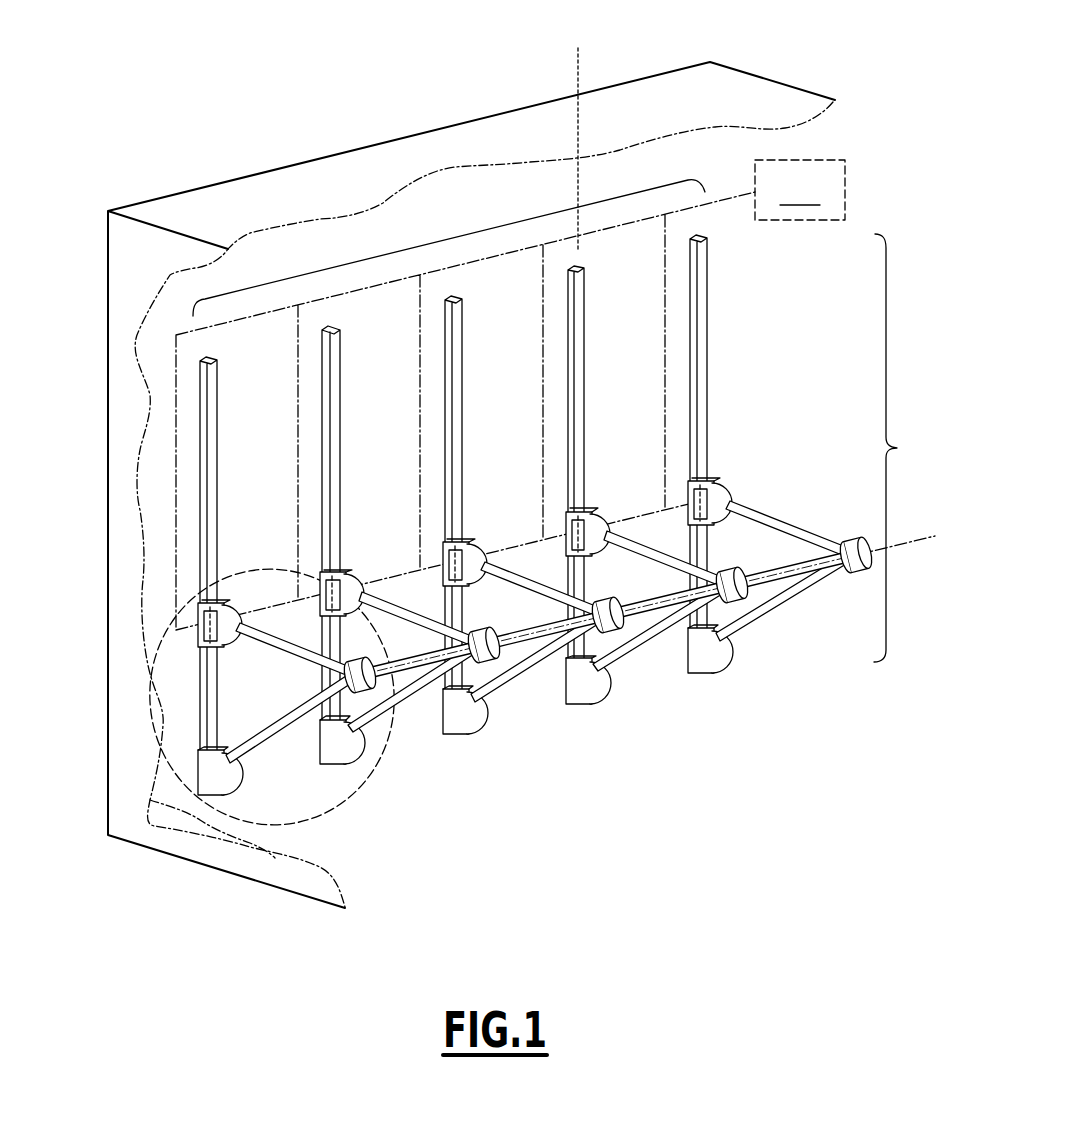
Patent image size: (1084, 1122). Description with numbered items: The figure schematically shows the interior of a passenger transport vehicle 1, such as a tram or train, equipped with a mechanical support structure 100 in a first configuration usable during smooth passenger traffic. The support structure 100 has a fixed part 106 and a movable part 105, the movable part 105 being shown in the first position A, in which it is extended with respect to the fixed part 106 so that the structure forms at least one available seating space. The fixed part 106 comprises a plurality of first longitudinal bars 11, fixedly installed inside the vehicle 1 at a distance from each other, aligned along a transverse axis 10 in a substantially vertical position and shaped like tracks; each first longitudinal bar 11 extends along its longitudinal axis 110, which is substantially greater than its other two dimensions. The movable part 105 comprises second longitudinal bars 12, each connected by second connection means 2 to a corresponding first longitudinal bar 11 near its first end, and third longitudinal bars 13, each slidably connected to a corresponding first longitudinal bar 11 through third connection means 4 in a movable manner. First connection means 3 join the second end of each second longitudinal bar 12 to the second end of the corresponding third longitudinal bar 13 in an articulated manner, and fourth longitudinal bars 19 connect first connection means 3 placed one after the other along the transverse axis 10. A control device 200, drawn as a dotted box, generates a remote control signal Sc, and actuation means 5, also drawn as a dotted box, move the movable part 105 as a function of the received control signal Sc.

The passenger transport vehicle 1 is at (298, 192).
The second connection means 2 is at (207, 770).
The first connection means 3 is at (374, 690).
The third connection means 4 is at (241, 612).
The actuation means 5 is at (200, 640).
The transverse axis 10 is at (928, 548).
The first longitudinal bar 11 is at (322, 476).
The second longitudinal bar 12 is at (287, 752).
The third longitudinal bar 13 is at (282, 655).
The fourth longitudinal bar 19 is at (426, 680).
The mechanical support structure 100 is at (905, 448).
The movable part 105 is at (337, 803).
The fixed part 106 is at (454, 252).
The longitudinal axis 110 is at (577, 70).
The control device 200 is at (800, 190).
The remote control signal Sc is at (723, 198).
The first position A is at (520, 741).